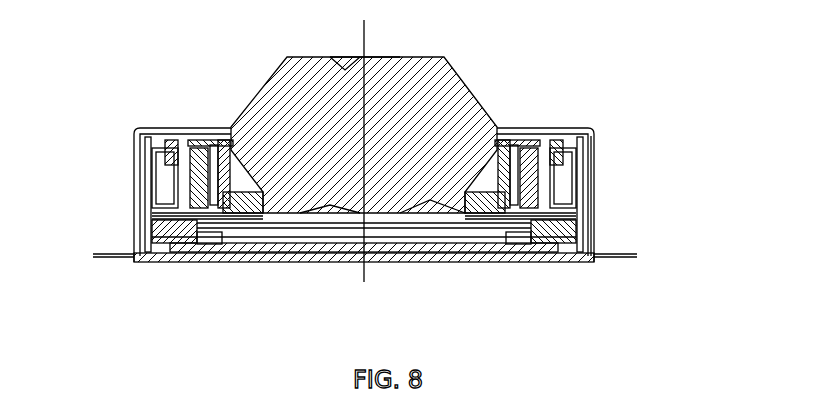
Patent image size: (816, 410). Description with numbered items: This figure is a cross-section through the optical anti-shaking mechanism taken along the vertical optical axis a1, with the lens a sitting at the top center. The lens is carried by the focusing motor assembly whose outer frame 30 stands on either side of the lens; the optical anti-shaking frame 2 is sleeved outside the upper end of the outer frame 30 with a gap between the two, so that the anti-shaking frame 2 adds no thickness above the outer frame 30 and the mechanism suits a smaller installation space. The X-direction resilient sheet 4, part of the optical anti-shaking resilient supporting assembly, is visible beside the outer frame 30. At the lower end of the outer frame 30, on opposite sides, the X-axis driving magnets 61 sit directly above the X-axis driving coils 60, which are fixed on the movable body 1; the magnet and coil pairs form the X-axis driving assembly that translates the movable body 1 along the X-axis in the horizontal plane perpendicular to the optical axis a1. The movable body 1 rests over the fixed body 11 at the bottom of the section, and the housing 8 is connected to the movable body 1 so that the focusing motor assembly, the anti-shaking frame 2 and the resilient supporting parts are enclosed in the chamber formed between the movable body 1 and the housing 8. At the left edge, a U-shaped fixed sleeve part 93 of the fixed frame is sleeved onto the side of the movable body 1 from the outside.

The lens a is at (277, 83).
The optical axis a1 is at (357, 73).
The optical anti-shaking frame 2 is at (548, 138).
The housing 8 is at (563, 133).
The outer frame 30 is at (565, 148).
The X-direction resilient sheet 4 is at (562, 187).
The X-axis driving magnet 61 is at (565, 213).
The X-axis driving coil 60 is at (557, 237).
The movable body 1 is at (548, 232).
The fixed body 11 is at (238, 260).
The fixed sleeve part 93 is at (140, 235).